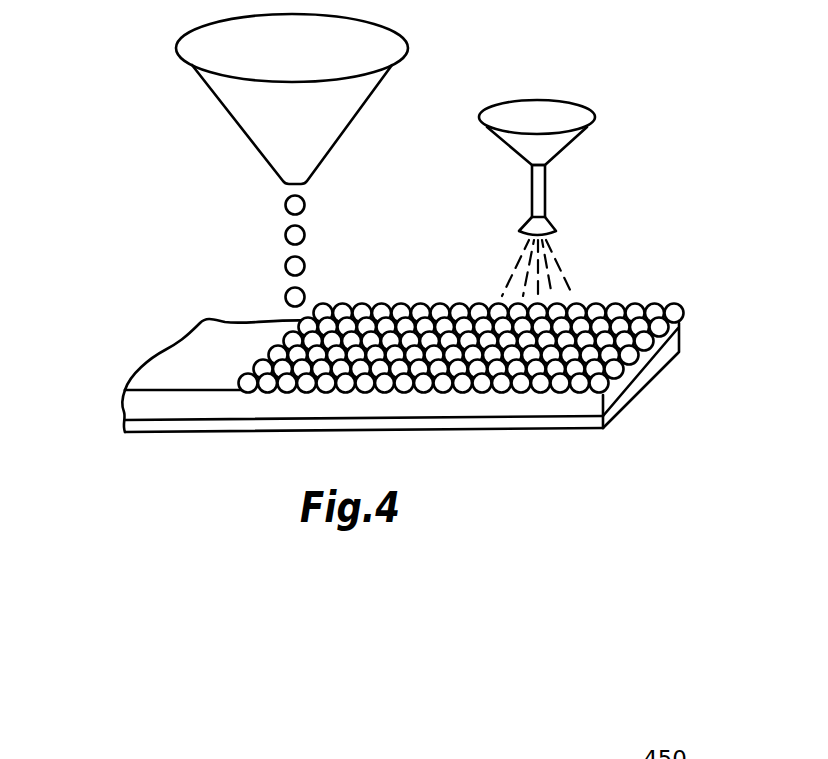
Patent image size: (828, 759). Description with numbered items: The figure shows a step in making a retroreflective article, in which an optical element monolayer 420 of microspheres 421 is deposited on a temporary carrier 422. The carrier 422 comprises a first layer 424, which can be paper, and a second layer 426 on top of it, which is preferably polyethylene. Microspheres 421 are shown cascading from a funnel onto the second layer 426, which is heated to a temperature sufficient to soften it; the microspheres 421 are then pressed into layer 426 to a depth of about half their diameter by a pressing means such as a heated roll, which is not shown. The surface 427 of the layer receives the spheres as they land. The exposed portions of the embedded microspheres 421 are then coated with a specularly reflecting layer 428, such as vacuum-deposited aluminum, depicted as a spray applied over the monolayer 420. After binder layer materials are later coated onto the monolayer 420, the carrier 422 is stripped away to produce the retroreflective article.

The optical element monolayer 420 is at (689, 305).
The microspheres 421 is at (285, 262).
The temporary carrier 422 is at (358, 414).
The first layer 424 is at (178, 425).
The second layer 426 is at (530, 402).
The surface of upper layer 427 is at (178, 336).
The specularly reflecting layer 428 is at (563, 269).